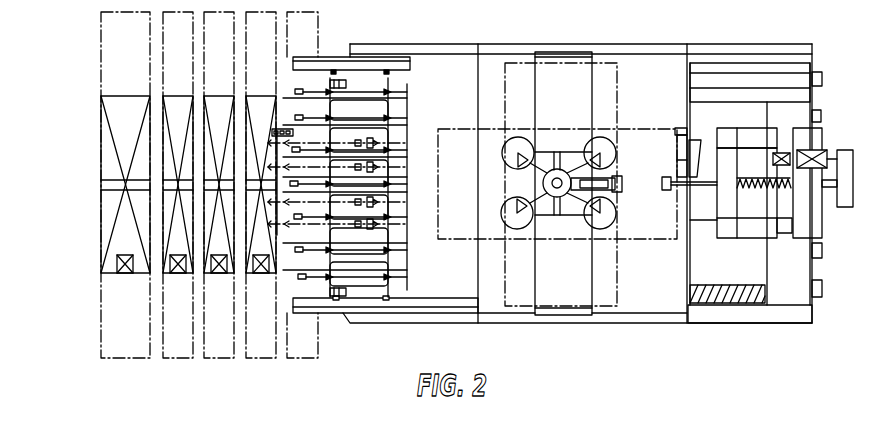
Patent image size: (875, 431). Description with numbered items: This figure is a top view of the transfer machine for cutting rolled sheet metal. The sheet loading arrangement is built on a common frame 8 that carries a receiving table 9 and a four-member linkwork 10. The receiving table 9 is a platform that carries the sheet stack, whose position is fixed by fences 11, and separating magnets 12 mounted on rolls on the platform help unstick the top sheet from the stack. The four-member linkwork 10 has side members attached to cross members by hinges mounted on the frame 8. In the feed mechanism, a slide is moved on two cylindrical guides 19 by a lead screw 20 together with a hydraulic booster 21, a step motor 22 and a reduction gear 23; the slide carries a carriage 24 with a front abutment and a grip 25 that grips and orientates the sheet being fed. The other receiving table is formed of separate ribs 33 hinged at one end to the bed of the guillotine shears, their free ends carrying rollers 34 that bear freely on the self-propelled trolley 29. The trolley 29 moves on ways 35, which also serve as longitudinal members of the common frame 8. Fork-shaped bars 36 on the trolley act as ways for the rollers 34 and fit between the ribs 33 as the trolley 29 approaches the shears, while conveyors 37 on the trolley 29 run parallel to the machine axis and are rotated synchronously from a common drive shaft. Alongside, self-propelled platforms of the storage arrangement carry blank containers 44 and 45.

The common frame 8 is at (546, 326).
The receiving table 9 is at (737, 278).
The four-member linkwork 10 is at (545, 155).
The fences 11 is at (789, 317).
The separating magnets 12 is at (818, 292).
The cylindrical guides 19 is at (777, 140).
The lead screw 20 is at (754, 193).
The hydraulic booster 21 is at (828, 148).
The step motor 22 is at (783, 153).
The reduction gear 23 is at (844, 208).
The carriage 24 is at (690, 157).
The grip 25 is at (668, 190).
The trolley 29 is at (355, 80).
The ribs 33 is at (395, 90).
The rollers 34 is at (298, 277).
The ways 35 is at (358, 306).
The bars 36 is at (380, 268).
The conveyors 37 is at (307, 143).
The blank containers 44 is at (123, 103).
The blank containers 45 is at (176, 103).